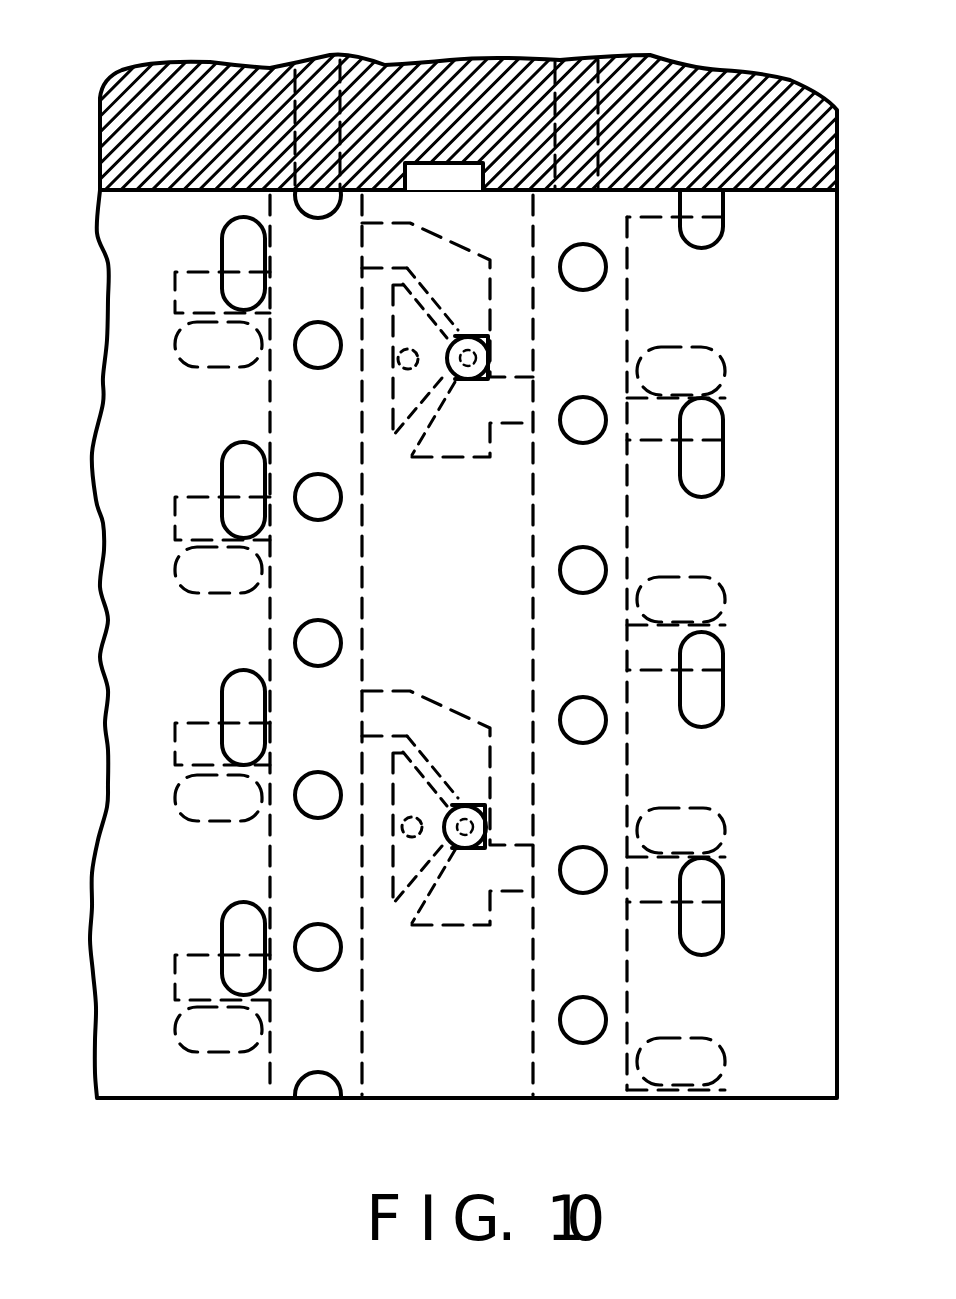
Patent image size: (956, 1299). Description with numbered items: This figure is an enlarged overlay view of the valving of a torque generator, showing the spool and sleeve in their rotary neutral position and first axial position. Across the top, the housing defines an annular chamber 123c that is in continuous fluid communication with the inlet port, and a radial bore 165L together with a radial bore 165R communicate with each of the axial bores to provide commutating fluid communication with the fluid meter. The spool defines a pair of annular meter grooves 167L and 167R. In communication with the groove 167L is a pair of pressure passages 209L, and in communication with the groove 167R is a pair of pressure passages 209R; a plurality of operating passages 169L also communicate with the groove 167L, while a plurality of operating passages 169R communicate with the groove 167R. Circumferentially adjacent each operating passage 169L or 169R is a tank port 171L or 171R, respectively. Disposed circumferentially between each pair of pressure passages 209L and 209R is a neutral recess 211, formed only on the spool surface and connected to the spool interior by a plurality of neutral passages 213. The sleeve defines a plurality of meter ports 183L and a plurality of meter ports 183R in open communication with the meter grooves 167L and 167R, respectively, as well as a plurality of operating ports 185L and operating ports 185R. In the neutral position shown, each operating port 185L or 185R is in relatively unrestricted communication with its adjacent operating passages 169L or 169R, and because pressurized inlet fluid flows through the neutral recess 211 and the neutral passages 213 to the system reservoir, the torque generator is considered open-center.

The radial bore 165L is at (317, 105).
The radial bore 165R is at (577, 80).
The annular chamber 123c is at (448, 172).
The pressure passages 209L is at (457, 287).
The pressure passages 209R is at (457, 422).
The neutral recess 211 is at (403, 413).
The neutral passages 213 is at (400, 365).
The tank port 171L is at (225, 347).
The operating ports 185L is at (243, 472).
The meter ports 183L is at (307, 505).
The operating passages 169L is at (193, 717).
The annular meter groove 167L is at (307, 852).
The meter ports 183R is at (572, 432).
The operating ports 185R is at (712, 470).
The tank port 171R is at (690, 597).
The annular meter groove 167R is at (590, 783).
The operating passages 169R is at (660, 880).